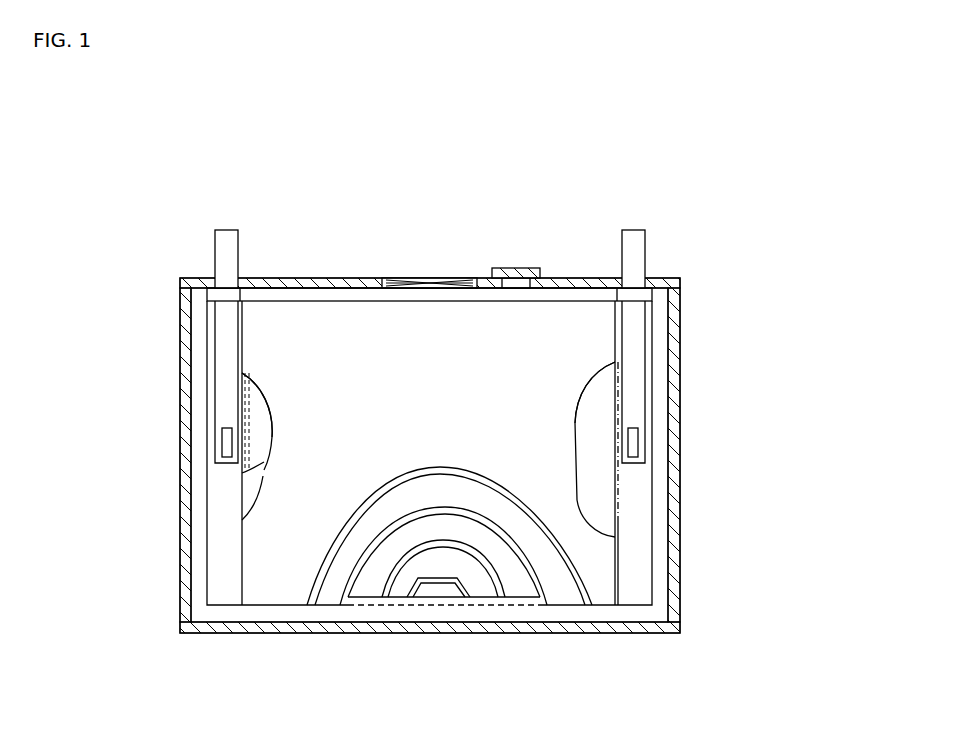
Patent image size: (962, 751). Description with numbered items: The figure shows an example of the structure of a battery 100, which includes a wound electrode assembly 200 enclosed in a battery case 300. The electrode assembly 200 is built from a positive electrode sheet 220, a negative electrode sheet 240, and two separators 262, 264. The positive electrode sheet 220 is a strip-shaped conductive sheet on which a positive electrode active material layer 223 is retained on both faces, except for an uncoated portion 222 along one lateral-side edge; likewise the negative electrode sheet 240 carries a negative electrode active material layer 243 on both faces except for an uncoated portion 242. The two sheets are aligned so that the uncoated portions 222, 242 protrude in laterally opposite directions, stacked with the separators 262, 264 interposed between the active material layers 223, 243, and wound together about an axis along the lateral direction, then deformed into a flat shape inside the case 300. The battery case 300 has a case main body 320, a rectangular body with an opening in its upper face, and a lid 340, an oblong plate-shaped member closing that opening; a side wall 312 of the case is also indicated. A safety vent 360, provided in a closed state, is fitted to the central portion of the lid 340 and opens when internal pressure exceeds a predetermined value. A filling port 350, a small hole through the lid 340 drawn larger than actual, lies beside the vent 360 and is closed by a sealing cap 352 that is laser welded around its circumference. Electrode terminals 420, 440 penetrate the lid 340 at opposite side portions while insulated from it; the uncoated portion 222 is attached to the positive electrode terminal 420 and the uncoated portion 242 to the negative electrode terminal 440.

The battery 100 is at (680, 249).
The electrode assembly 200 is at (327, 332).
The positive electrode sheet 220 is at (398, 588).
The uncoated portion 222 is at (222, 585).
The positive electrode active material layer 223 is at (262, 424).
The negative electrode sheet 240 is at (243, 508).
The uncoated portion 242 is at (642, 492).
The negative electrode active material layer 243 is at (585, 398).
The separator 262 is at (273, 545).
The separator 264 is at (243, 477).
The battery case 300 is at (680, 375).
The side wall 312 is at (660, 371).
The case main body 320 is at (681, 612).
The lid 340 is at (590, 276).
The filling port 350 is at (524, 251).
The sealing cap 352 is at (510, 268).
The safety vent 360 is at (428, 276).
The electrode terminal 420 is at (226, 224).
The electrode terminal 440 is at (633, 237).